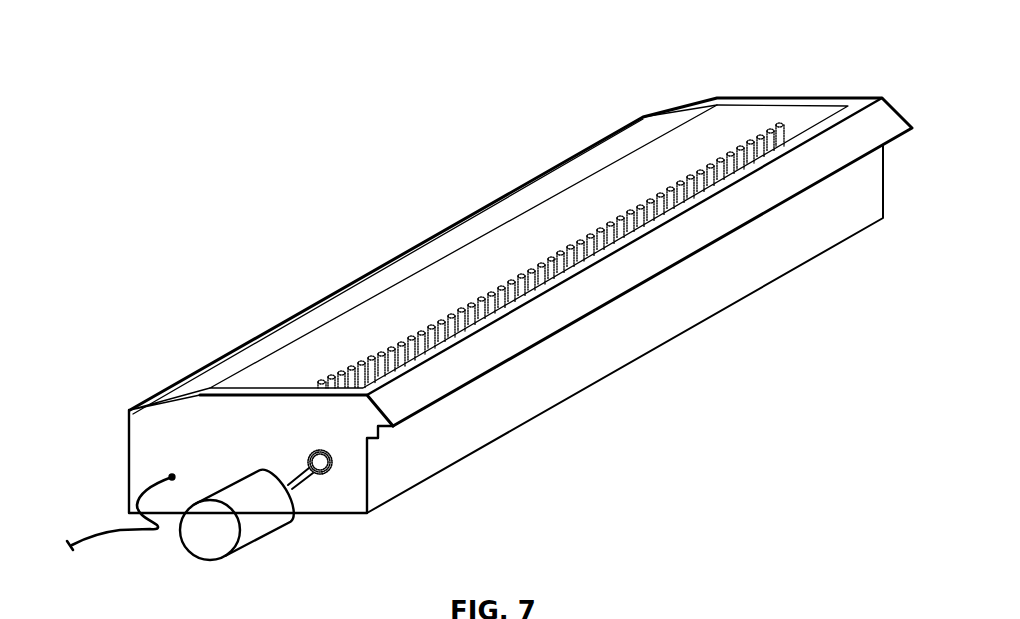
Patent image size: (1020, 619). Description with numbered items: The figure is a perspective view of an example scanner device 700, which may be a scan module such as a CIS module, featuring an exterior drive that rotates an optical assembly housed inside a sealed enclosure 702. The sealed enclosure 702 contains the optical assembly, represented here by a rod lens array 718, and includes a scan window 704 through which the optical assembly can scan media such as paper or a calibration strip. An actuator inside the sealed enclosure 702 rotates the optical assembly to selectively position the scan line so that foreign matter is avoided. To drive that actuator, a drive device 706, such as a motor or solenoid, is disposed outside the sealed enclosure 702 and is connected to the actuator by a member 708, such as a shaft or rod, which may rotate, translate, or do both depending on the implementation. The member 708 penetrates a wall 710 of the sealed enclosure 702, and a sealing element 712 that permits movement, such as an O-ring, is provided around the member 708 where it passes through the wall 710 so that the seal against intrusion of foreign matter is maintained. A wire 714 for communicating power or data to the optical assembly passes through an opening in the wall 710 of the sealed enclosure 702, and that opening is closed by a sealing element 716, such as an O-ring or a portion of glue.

The scanner device 700 is at (232, 84).
The sealed enclosure 702 is at (129, 390).
The scan window 704 is at (345, 330).
The drive device 706 is at (222, 545).
The member 708 is at (293, 481).
The wall 710 is at (163, 450).
The sealing element 712 is at (333, 460).
The wire 714 is at (118, 530).
The sealing element 716 is at (170, 475).
The rod lens array 718 is at (435, 317).